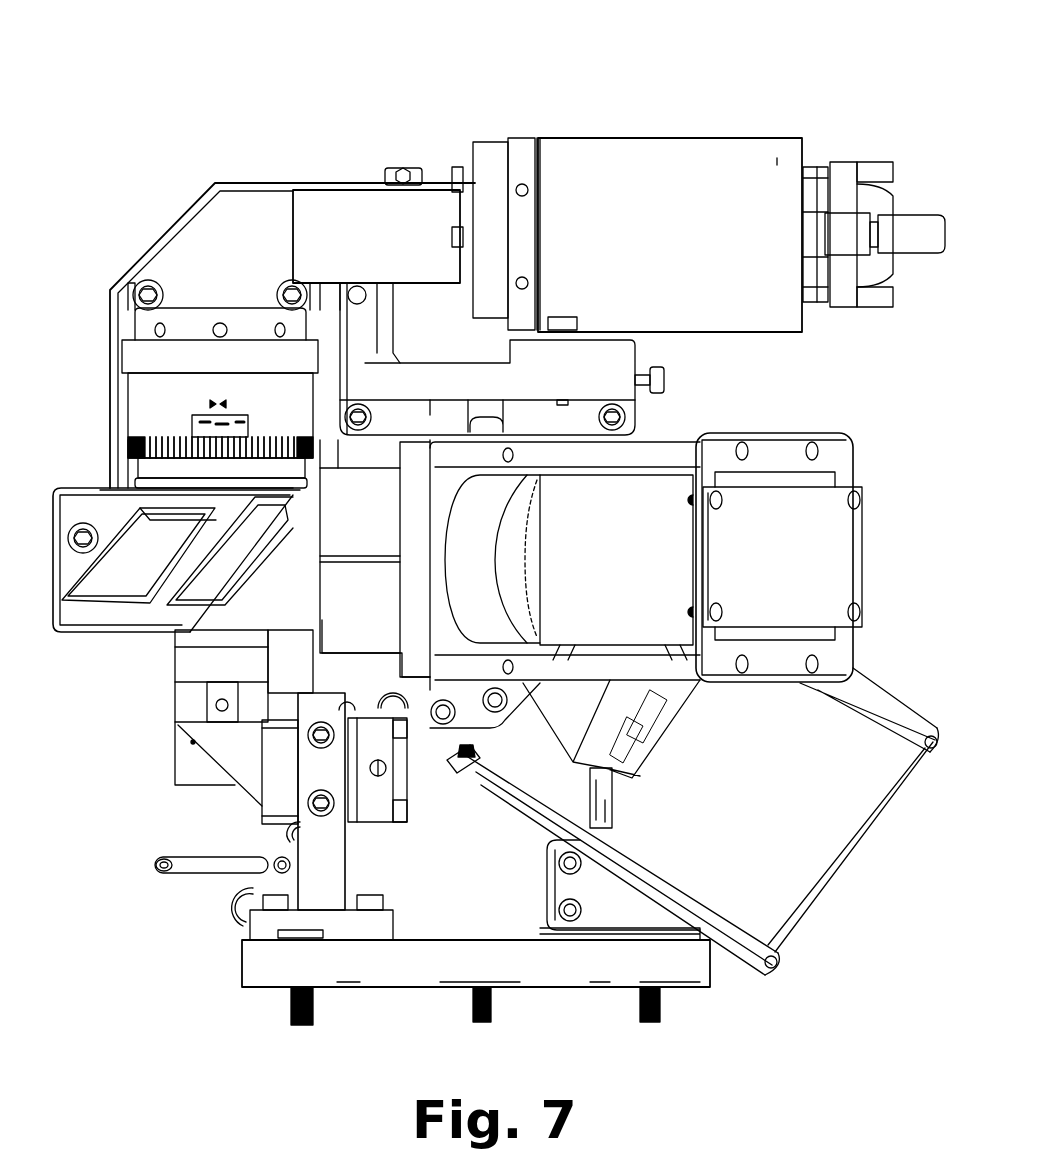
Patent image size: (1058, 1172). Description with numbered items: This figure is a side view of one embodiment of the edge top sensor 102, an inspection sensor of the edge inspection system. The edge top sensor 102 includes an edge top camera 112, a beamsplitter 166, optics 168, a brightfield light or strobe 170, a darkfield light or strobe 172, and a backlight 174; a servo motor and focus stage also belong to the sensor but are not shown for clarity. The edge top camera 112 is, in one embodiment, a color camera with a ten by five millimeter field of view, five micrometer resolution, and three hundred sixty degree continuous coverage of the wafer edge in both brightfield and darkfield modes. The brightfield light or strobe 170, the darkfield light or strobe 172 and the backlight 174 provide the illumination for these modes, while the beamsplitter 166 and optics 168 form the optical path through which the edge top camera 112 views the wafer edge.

The edge top sensor 102 is at (572, 74).
The edge top camera 112 is at (733, 172).
The beamsplitter 166 is at (84, 634).
The optics 168 is at (126, 390).
The brightfield light or strobe 170 is at (826, 549).
The darkfield light or strobe 172 is at (820, 852).
The backlight 174 is at (278, 808).